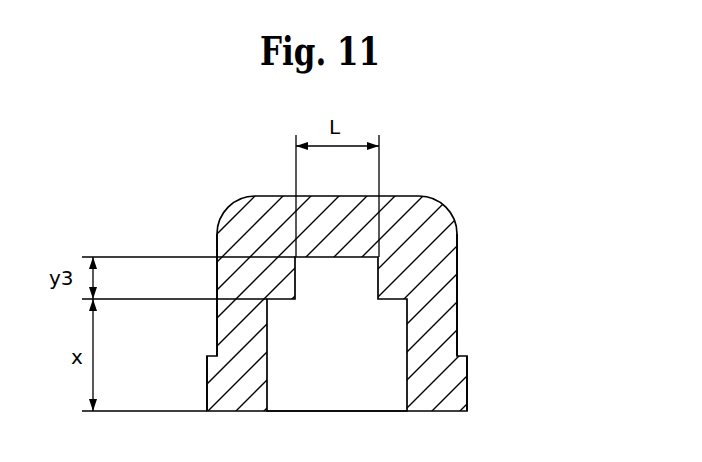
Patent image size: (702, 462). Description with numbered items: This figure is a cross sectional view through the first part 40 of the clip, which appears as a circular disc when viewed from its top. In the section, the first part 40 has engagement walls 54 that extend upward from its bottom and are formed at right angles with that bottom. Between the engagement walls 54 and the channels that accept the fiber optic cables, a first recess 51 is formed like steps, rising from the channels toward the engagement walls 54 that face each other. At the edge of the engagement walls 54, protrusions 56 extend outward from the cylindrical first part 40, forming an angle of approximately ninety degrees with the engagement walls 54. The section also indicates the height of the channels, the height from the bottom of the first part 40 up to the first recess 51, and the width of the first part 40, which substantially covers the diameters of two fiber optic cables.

The first part 40 is at (533, 232).
The first recess 51 is at (297, 341).
The engagement walls 54 is at (217, 328).
The protrusions 56 is at (207, 376).